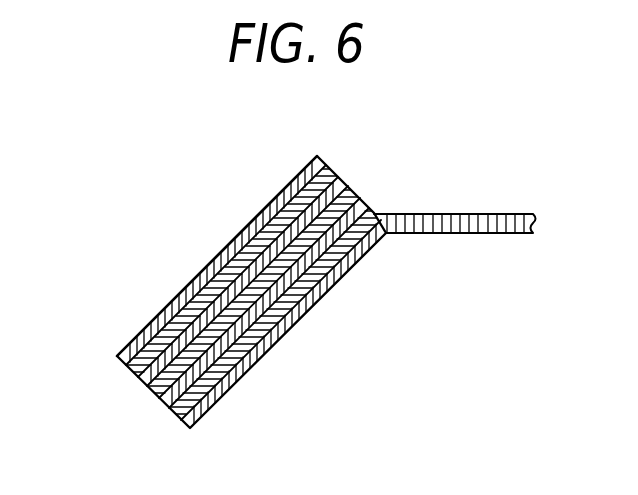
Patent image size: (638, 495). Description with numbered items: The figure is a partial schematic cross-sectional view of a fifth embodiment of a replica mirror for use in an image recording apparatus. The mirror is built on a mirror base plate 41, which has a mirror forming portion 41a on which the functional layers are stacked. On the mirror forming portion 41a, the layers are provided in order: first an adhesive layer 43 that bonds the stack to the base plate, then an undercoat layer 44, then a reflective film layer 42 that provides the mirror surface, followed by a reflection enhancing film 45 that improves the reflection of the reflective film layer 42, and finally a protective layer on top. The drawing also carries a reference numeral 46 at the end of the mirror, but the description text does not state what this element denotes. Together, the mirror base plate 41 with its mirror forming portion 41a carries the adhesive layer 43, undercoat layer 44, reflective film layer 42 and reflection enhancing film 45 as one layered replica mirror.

The mirror base plate 41 is at (448, 234).
The mirror forming portion 41a is at (217, 393).
The reflective film layer 42 is at (343, 184).
The adhesive layer 43 is at (365, 212).
The undercoat layer 44 is at (355, 201).
The reflection enhancing film 45 is at (140, 371).
The corner edge 46 is at (118, 356).